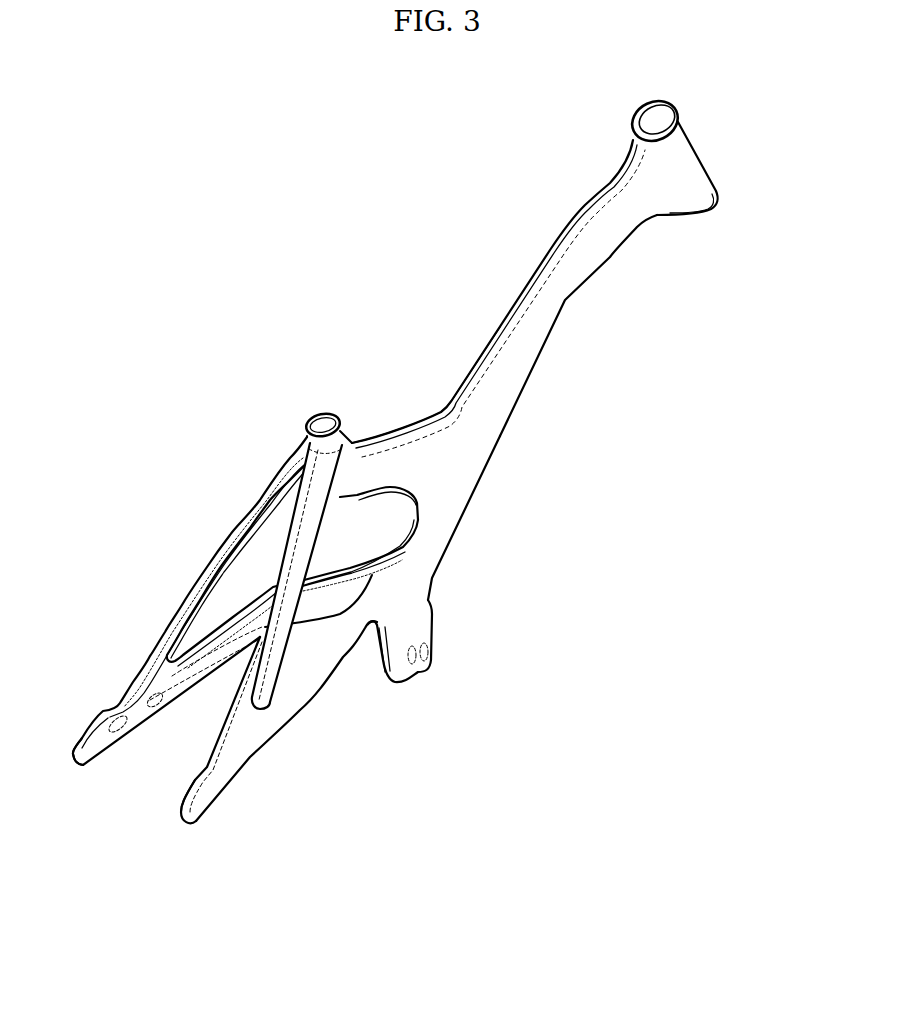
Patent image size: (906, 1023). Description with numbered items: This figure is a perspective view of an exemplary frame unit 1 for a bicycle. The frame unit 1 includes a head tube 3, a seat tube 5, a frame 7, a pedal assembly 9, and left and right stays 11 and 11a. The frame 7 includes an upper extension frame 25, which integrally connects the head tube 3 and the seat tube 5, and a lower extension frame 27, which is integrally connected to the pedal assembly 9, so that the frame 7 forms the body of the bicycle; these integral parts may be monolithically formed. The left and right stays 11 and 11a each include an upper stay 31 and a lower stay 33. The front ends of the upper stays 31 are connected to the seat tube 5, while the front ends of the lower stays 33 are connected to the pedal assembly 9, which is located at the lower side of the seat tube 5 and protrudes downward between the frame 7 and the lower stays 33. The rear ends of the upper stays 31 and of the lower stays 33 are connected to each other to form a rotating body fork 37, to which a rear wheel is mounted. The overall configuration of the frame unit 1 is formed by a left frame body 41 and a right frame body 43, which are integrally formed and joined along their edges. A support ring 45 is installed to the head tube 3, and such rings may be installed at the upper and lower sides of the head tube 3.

The frame unit 1 is at (262, 308).
The head tube 3 is at (689, 155).
The seat tube 5 is at (317, 415).
The frame 7 is at (587, 250).
The pedal assembly 9 is at (412, 672).
The left stay 11 is at (175, 581).
The right stay 11a is at (343, 697).
The upper extension frame 25 is at (437, 440).
The lower extension frame 27 is at (442, 530).
The upper stay 31 is at (287, 555).
The lower stay 33 is at (178, 690).
The rotating body fork 37 is at (77, 767).
The left frame body 41 is at (486, 314).
The right frame body 43 is at (484, 462).
The support ring 45 is at (645, 104).